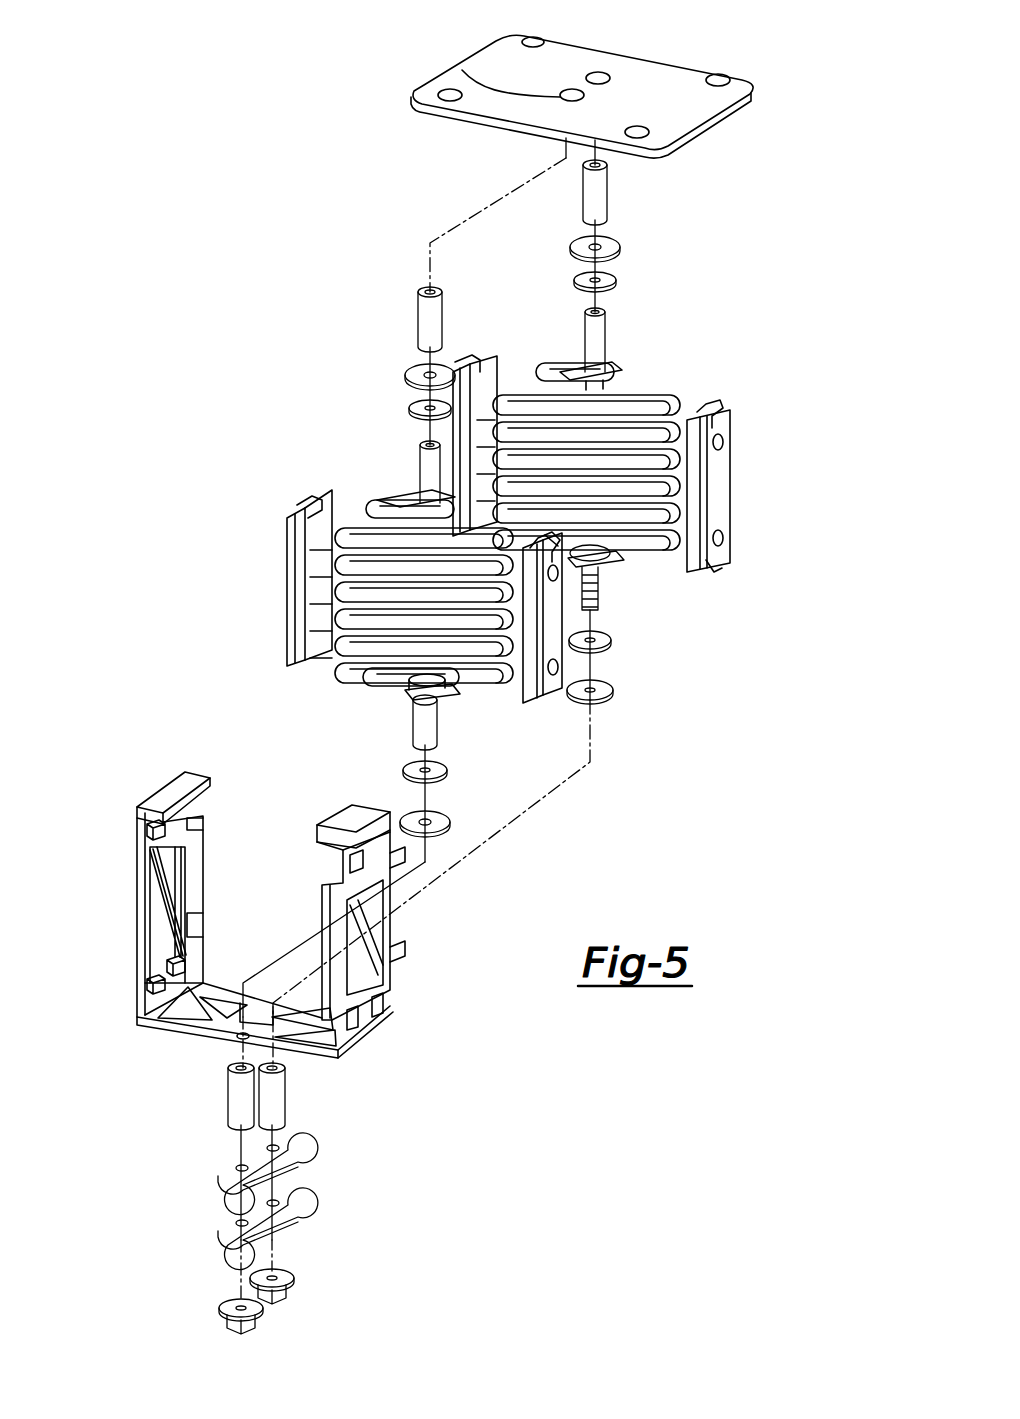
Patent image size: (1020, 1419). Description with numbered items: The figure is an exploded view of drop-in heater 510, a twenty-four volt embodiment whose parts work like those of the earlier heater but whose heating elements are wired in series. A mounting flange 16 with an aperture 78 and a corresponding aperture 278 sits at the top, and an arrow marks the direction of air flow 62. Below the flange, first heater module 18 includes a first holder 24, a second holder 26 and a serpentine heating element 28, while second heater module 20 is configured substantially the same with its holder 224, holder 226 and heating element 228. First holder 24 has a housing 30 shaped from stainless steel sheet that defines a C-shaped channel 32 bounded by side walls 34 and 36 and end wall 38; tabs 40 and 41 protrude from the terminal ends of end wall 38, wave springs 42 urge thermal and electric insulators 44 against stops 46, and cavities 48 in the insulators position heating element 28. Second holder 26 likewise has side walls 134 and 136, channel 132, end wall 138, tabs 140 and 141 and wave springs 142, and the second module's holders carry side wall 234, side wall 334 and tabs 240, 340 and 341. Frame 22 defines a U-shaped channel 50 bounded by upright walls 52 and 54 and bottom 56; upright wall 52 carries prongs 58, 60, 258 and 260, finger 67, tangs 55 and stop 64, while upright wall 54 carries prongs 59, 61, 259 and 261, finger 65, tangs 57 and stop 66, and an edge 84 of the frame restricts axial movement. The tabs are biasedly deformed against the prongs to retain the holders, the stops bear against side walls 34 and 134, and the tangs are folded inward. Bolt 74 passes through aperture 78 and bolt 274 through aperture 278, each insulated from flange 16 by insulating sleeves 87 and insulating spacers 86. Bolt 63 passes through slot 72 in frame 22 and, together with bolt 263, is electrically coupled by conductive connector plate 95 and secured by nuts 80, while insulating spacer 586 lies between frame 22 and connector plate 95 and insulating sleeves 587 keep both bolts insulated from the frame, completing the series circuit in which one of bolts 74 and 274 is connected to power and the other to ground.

The mounting flange 16 is at (578, 80).
The aperture 78 is at (462, 70).
The aperture 278 is at (612, 79).
The drop-in heater 510 is at (318, 214).
The direction of air flow 62 is at (746, 309).
The insulating sleeve 87 is at (600, 190).
The insulating spacer 86 is at (612, 247).
The side wall 234 is at (420, 405).
The bolt 274 is at (606, 313).
The bolt 74 is at (363, 448).
The first holder 224 is at (448, 436).
The second heater module 20 is at (668, 444).
The heating element 228 is at (620, 400).
The tab 240 is at (468, 364).
The second holder 226 is at (779, 475).
The side wall 334 is at (761, 475).
The tab 340 is at (703, 412).
The tab 341 is at (738, 568).
The side wall 136 is at (617, 662).
The bolt 263 is at (616, 595).
The tab 140 is at (548, 566).
The wave spring 142 is at (612, 642).
The channel 132 is at (614, 690).
The end wall 138 is at (592, 712).
The second holder 26 is at (575, 662).
The side wall 134 is at (529, 662).
The tab 141 is at (553, 690).
The first holder 24 is at (320, 632).
The first heater module 18 is at (320, 632).
The serpentine heating element 28 is at (424, 602).
The thermal and electric insulator 44 is at (340, 538).
The bolt 63 is at (423, 716).
The prong 259 is at (393, 843).
The housing 30 is at (242, 574).
The side wall 36 is at (242, 574).
The tab 40 is at (300, 494).
The wave spring 42 is at (298, 505).
The channel 32 is at (297, 608).
The end wall 38 is at (296, 643).
The side wall 34 is at (298, 664).
The cavity 48 is at (298, 585).
The stop 46 is at (320, 662).
The tab 41 is at (312, 652).
The frame 22 is at (276, 927).
The channel 50 is at (276, 907).
The stop 64 is at (157, 863).
The finger 67 is at (192, 785).
The prong 58 is at (146, 832).
The tang 55 is at (194, 832).
The upright wall 52 is at (165, 887).
The prong 260 is at (150, 950).
The bottom 56 is at (192, 993).
The prong 258 is at (207, 813).
The prong 60 is at (218, 1044).
The slot 72 is at (240, 1037).
The stop 66 is at (403, 907).
The finger 65 is at (343, 824).
The edge 84 is at (392, 990).
The prong 59 is at (385, 905).
The tang 57 is at (403, 860).
The upright wall 54 is at (385, 998).
The prong 261 is at (362, 1025).
The prong 61 is at (343, 1052).
The insulating sleeve 587 is at (238, 1100).
The insulating spacer 586 is at (262, 1160).
The connector plate 95 is at (225, 1230).
The nut 80 is at (250, 1326).